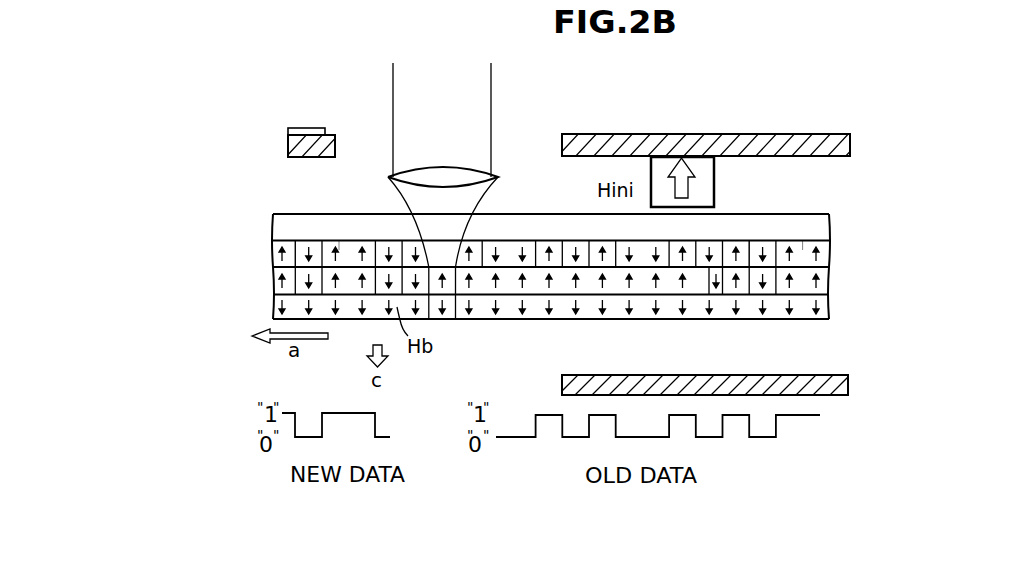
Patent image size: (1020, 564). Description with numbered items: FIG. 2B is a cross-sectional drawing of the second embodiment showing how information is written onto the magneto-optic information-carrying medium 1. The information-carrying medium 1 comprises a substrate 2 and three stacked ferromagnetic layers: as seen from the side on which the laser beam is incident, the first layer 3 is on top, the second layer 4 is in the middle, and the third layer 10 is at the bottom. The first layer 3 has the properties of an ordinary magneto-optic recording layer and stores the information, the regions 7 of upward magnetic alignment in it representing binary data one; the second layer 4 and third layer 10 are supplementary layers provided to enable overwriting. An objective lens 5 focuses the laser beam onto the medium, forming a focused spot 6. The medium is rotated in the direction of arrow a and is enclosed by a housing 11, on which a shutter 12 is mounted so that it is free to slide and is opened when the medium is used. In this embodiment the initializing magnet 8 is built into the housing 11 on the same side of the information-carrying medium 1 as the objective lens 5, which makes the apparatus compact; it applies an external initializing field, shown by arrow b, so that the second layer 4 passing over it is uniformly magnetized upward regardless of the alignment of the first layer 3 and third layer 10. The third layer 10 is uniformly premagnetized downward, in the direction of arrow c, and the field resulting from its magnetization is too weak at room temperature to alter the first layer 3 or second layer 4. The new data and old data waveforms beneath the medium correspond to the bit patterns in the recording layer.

The information-carrying medium 1 is at (743, 214).
The substrate 2 is at (829, 224).
The first layer 3 is at (830, 258).
The second layer 4 is at (830, 287).
The objective lens 5 is at (498, 177).
The focused spot 6 is at (475, 240).
The regions of upward magnetic alignment 7 is at (295, 240).
The initializing magnet 8 is at (651, 177).
The third layer 10 is at (830, 313).
The housing 11 is at (745, 134).
The shutter 12 is at (320, 128).